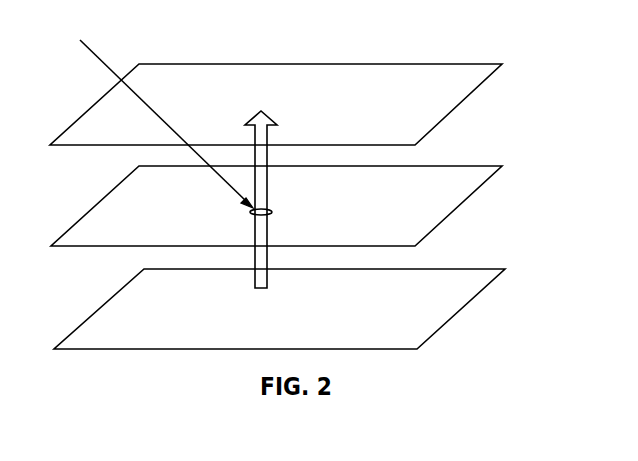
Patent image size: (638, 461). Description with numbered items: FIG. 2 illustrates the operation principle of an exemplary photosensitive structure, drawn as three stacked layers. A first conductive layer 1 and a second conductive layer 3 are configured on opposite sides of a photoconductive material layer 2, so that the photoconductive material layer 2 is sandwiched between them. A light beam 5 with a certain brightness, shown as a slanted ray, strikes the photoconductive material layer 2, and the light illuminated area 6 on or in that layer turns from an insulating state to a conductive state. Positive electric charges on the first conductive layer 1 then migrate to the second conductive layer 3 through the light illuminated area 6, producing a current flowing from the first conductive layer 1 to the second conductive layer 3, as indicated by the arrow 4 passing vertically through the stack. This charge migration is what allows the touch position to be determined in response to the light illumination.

The first conductive layer 1 is at (505, 269).
The photoconductive material layer 2 is at (502, 166).
The second conductive layer 3 is at (502, 64).
The arrow 4 is at (262, 286).
The light beam 5 is at (96, 55).
The light illuminated area 6 is at (272, 212).